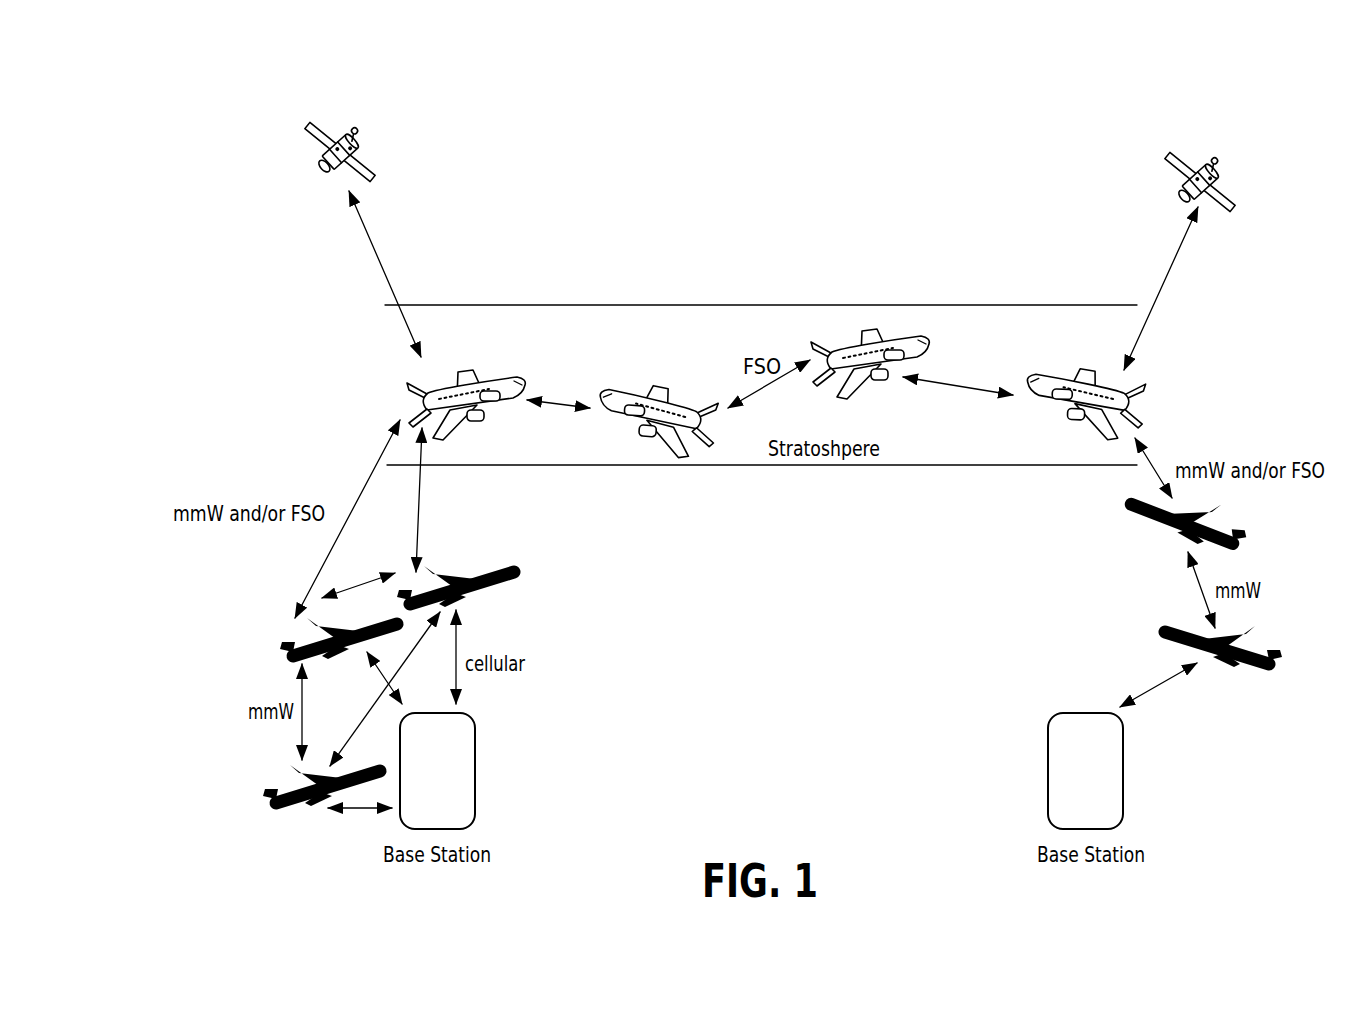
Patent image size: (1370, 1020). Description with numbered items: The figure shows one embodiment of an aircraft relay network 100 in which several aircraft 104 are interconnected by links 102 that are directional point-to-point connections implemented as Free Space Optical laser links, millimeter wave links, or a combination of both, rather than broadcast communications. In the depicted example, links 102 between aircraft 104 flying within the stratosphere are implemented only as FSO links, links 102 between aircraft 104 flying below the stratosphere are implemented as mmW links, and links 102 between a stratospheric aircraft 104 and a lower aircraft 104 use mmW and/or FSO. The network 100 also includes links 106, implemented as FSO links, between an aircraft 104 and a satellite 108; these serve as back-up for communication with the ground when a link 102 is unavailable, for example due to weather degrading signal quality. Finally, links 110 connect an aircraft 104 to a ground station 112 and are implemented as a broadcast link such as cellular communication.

The aircraft relay network 100 is at (600, 128).
The links 102 is at (738, 405).
The aircraft 104 is at (498, 397).
The links 106 is at (375, 246).
The satellite 108 is at (352, 152).
The links 110 is at (457, 645).
The ground station 112 is at (477, 775).